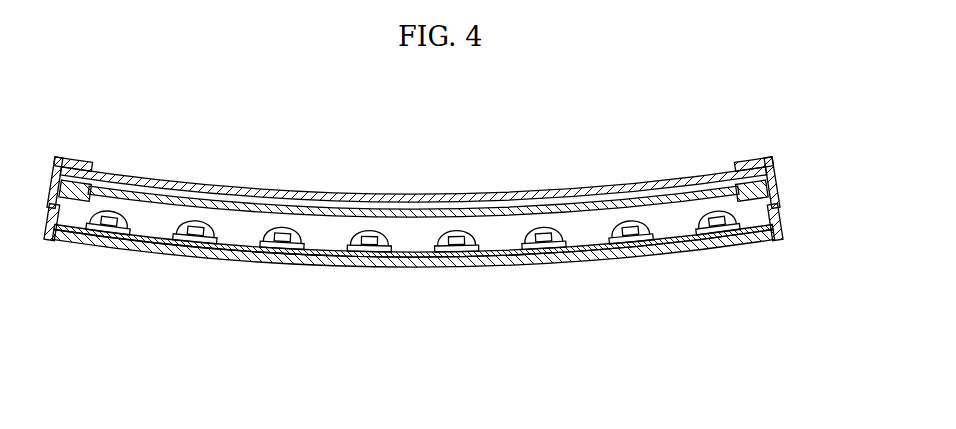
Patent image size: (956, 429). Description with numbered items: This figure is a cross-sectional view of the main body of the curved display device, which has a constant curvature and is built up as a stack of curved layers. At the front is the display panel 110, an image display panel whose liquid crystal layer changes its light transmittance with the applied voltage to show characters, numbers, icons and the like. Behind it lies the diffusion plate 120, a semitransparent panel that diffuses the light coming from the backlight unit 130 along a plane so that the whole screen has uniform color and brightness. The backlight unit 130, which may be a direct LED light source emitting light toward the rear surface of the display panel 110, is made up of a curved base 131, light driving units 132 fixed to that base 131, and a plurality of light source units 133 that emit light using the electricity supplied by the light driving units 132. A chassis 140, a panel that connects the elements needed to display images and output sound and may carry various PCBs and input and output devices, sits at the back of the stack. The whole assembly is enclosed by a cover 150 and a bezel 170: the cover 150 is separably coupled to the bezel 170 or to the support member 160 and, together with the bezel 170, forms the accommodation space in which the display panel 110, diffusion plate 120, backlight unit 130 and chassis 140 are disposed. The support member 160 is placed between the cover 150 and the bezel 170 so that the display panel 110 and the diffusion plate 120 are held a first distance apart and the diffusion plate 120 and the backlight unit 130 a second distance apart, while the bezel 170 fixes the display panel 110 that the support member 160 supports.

The display panel 110 is at (233, 186).
The diffusion plate 120 is at (303, 206).
The backlight unit 130 is at (413, 294).
The base 131 is at (418, 256).
The light driving unit 132 is at (463, 252).
The light source unit 133 is at (417, 336).
The chassis 140 is at (590, 257).
The cover 150 is at (776, 240).
The support member 160 is at (783, 214).
The bezel 170 is at (767, 156).